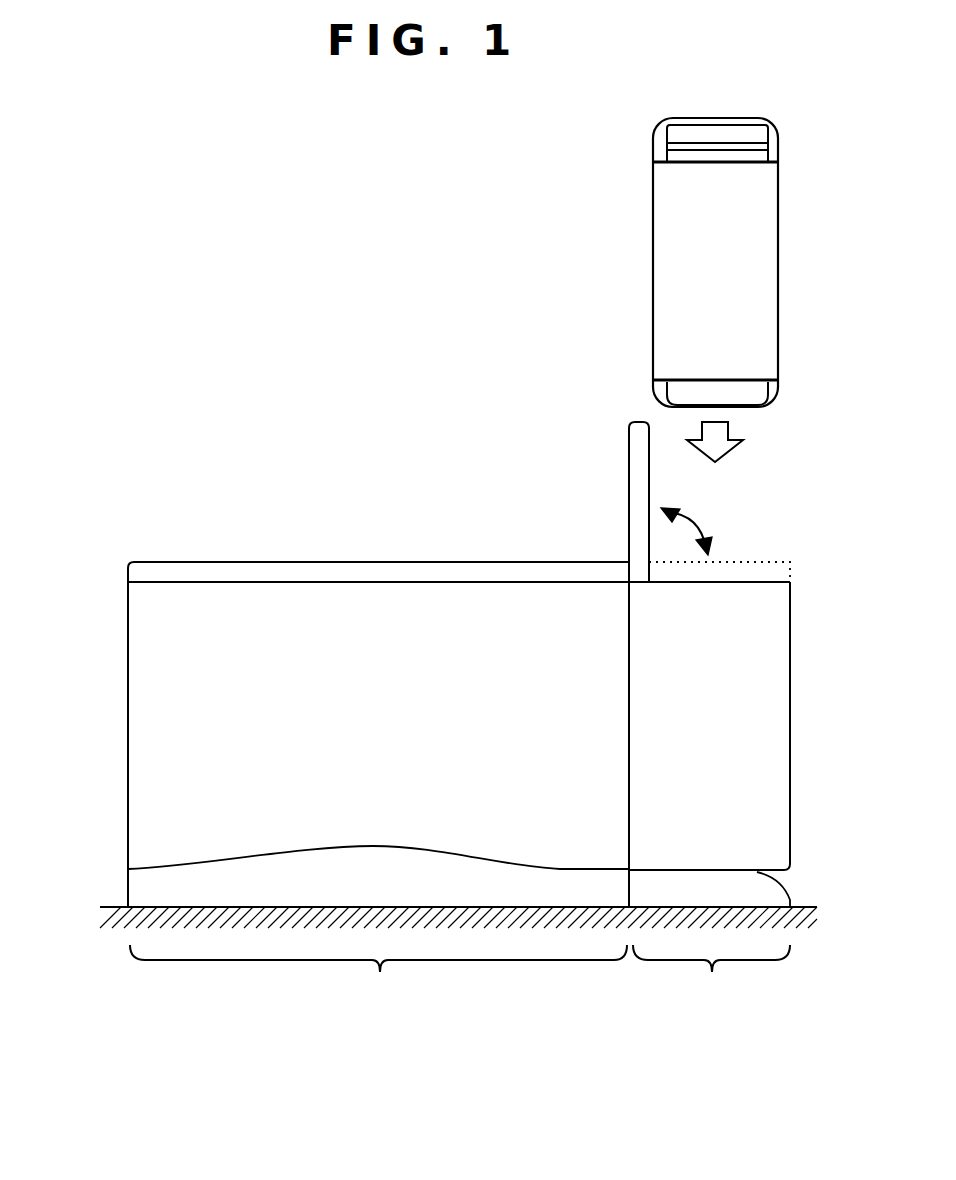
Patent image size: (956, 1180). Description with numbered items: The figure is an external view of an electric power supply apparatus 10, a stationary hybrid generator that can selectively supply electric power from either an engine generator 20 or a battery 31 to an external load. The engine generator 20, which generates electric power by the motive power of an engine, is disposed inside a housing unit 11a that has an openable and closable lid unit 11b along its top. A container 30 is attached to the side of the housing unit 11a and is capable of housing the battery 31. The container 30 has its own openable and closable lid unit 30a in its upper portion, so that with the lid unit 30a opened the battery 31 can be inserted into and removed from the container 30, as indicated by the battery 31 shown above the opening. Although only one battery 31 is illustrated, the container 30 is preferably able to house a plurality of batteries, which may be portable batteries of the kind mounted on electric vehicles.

The electric power supply apparatus 10 is at (188, 512).
The housing unit 11a is at (127, 743).
The lid unit 11b is at (127, 575).
The engine generator 20 is at (378, 975).
The container 30 is at (711, 975).
The lid unit 30a is at (628, 460).
The battery 31 is at (652, 238).